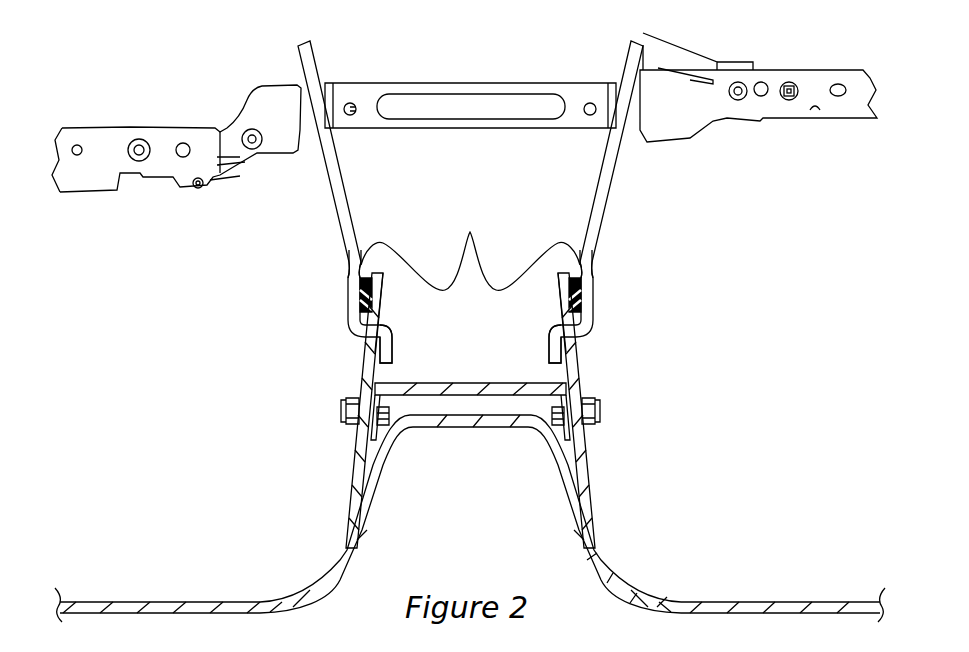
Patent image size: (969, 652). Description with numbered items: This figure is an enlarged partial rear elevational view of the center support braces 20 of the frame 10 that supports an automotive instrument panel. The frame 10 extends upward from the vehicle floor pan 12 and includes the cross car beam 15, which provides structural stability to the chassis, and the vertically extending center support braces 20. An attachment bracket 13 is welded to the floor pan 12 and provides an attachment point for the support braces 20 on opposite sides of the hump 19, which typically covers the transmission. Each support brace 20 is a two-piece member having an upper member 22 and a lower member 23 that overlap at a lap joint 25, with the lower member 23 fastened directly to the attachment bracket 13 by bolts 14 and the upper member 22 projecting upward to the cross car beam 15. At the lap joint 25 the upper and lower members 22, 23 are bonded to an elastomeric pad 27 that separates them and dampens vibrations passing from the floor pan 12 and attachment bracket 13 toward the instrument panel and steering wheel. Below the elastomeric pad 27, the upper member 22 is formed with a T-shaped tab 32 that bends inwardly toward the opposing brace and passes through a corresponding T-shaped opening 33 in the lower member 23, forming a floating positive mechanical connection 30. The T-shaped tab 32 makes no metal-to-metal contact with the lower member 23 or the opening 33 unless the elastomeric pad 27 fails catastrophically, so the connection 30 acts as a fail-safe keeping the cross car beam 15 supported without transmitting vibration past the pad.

The frame 10 is at (198, 75).
The floor pan 12 is at (808, 600).
The attachment bracket 13 is at (356, 500).
The bolts 14 is at (598, 412).
The cross car beam 15 is at (784, 70).
The hump 19 is at (490, 428).
The support brace 20 is at (590, 254).
The upper member 22 is at (603, 206).
The lower member 23 is at (582, 386).
The lap joint 25 is at (591, 294).
The elastomeric pad 27 is at (470, 251).
The floating positive mechanical connection 30 is at (454, 294).
The T-shaped tab 32 is at (548, 344).
The T-shaped opening 33 is at (574, 362).